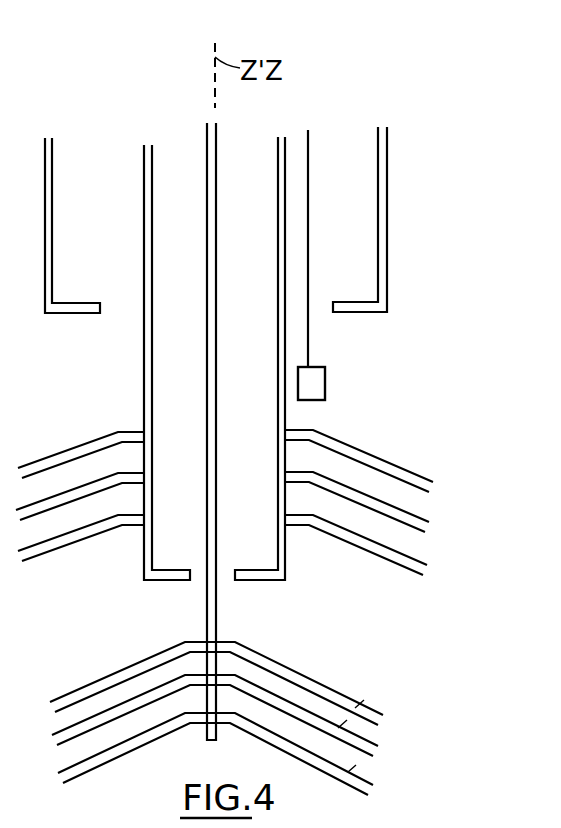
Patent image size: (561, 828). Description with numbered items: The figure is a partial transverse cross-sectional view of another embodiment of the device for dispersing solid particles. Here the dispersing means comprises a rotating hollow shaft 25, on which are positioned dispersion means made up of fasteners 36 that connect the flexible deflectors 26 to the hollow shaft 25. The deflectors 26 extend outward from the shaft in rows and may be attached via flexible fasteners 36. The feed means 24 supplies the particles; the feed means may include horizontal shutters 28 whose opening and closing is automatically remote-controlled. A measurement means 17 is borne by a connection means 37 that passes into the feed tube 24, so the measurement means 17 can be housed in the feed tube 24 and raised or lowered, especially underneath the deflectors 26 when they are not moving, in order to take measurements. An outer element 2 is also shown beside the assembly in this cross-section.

The outer support bracket 2 is at (45, 278).
The measurement means 17 is at (310, 385).
The feed means 24 is at (358, 300).
The rotating hollow shaft 25 is at (283, 415).
The flexible deflectors 26 is at (387, 456).
The horizontal shutters 28 is at (142, 378).
The fasteners 36 is at (300, 512).
The connection means 37 is at (308, 212).